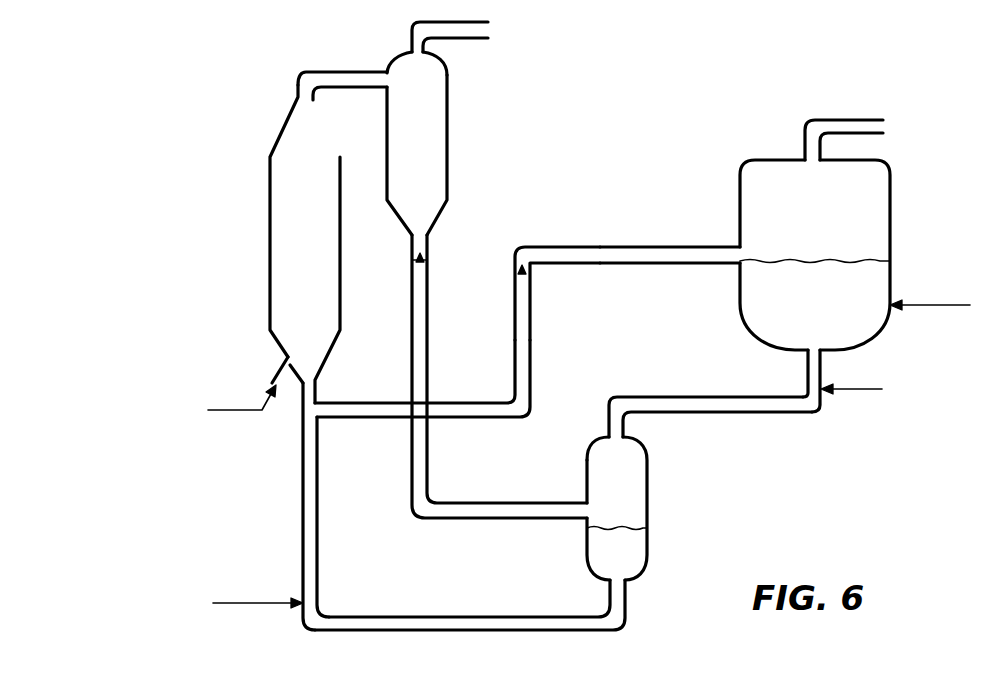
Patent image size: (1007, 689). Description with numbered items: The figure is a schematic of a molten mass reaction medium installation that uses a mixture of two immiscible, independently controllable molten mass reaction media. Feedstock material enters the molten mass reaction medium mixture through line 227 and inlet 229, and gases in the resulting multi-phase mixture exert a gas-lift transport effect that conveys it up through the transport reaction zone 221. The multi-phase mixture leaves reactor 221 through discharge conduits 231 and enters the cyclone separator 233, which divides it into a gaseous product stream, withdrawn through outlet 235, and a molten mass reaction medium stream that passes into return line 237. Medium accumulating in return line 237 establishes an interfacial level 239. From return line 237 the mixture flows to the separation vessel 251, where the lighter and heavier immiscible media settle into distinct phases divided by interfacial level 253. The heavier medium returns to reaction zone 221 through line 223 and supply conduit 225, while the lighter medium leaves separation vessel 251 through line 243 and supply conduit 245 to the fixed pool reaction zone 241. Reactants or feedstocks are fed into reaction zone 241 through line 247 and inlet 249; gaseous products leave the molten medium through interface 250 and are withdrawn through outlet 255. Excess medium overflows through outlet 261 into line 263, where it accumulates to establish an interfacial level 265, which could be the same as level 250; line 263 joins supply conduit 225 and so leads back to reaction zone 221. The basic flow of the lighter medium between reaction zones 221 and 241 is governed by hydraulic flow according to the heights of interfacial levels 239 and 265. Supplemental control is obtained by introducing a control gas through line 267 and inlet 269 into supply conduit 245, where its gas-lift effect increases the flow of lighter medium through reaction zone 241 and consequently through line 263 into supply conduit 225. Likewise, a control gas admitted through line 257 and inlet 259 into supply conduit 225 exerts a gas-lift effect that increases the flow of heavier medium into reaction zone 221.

The transport reaction zone 221 is at (282, 257).
The line 223 is at (444, 622).
The supply conduit 225 is at (312, 501).
The line 227 is at (244, 412).
The inlet 229 is at (283, 357).
The discharge conduits 231 is at (341, 78).
The cyclone separator 233 is at (436, 130).
The outlet 235 is at (413, 35).
The return line 237 is at (422, 347).
The interfacial level 239 is at (424, 257).
The fixed pool reaction zone 241 is at (737, 203).
The line 243 is at (673, 408).
The supply conduit 245 is at (815, 371).
The line 247 is at (947, 308).
The inlet 249 is at (898, 302).
The interface 250 is at (833, 259).
The separation vessel 251 is at (648, 481).
The interfacial level 253 is at (625, 527).
The outlet 255 is at (836, 125).
The line 257 is at (252, 606).
The inlet 259 is at (300, 601).
The outlet 261 is at (739, 264).
The line 263 is at (369, 404).
The interfacial level 265 is at (531, 271).
The line 267 is at (868, 392).
The inlet 269 is at (823, 398).